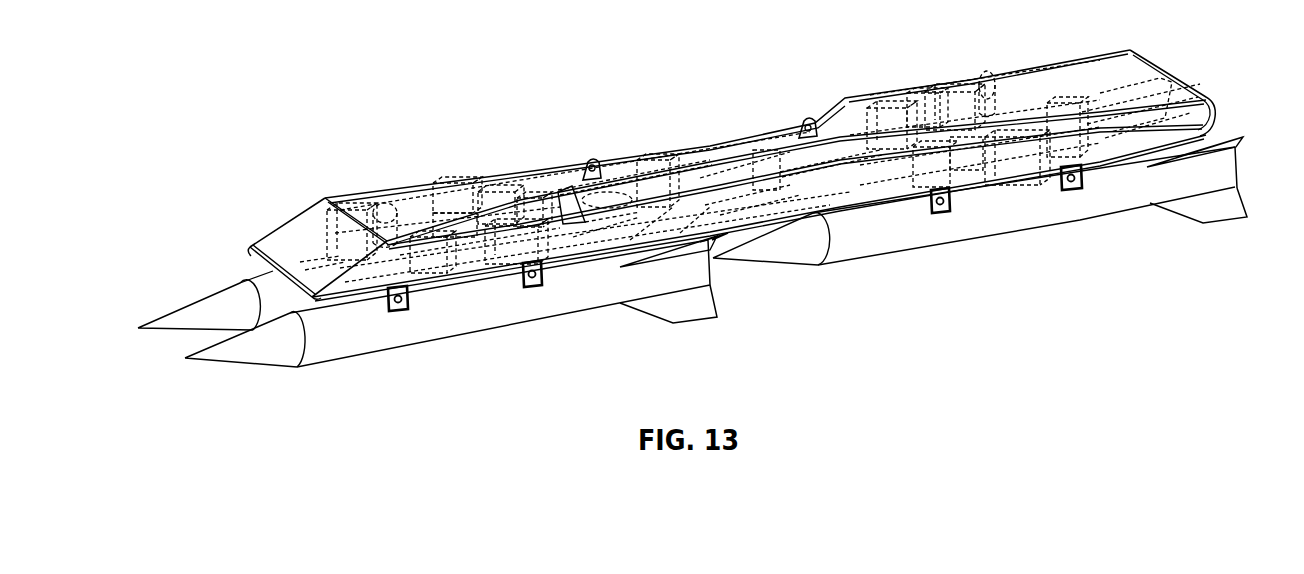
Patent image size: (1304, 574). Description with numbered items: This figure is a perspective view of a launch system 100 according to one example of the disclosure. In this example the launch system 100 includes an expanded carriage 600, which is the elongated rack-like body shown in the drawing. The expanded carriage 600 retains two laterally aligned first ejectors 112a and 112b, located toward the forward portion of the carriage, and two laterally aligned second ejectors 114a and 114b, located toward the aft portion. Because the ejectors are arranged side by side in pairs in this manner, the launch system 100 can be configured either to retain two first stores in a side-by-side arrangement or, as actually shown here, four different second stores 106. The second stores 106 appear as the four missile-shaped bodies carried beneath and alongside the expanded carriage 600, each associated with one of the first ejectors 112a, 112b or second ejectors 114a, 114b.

The launch system 100 is at (1212, 88).
The expanded carriage 600 is at (288, 221).
The second store 106 is at (197, 298).
The first ejector 112a is at (530, 243).
The first ejector 112b is at (485, 198).
The second ejector 114a is at (1003, 157).
The second ejector 114b is at (950, 90).